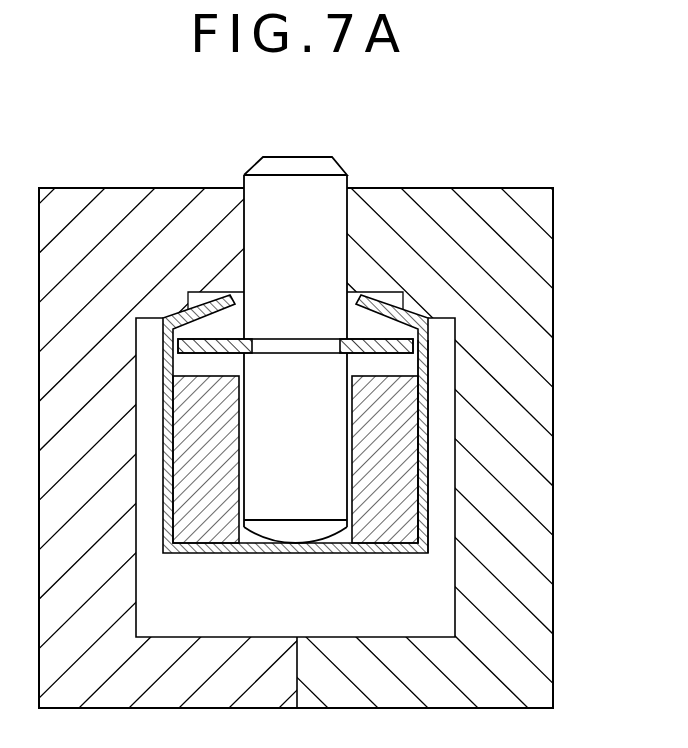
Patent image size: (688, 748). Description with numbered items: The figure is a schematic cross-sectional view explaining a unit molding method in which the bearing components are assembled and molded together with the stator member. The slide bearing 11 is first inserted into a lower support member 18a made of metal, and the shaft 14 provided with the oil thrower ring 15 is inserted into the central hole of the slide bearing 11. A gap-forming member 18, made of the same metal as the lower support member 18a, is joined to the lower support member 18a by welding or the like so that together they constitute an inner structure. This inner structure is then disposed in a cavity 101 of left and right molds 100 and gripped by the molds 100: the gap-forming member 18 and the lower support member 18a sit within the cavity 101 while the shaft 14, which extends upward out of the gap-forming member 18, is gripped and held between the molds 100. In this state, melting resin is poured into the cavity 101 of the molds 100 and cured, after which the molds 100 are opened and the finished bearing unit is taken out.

The molds 100 is at (505, 233).
The cavity 101 is at (423, 598).
The shaft 14 is at (292, 192).
The oil thrower ring 15 is at (222, 340).
The gap-forming member 18 is at (418, 312).
The lower support member 18a is at (428, 513).
The slide bearing 11 is at (408, 419).